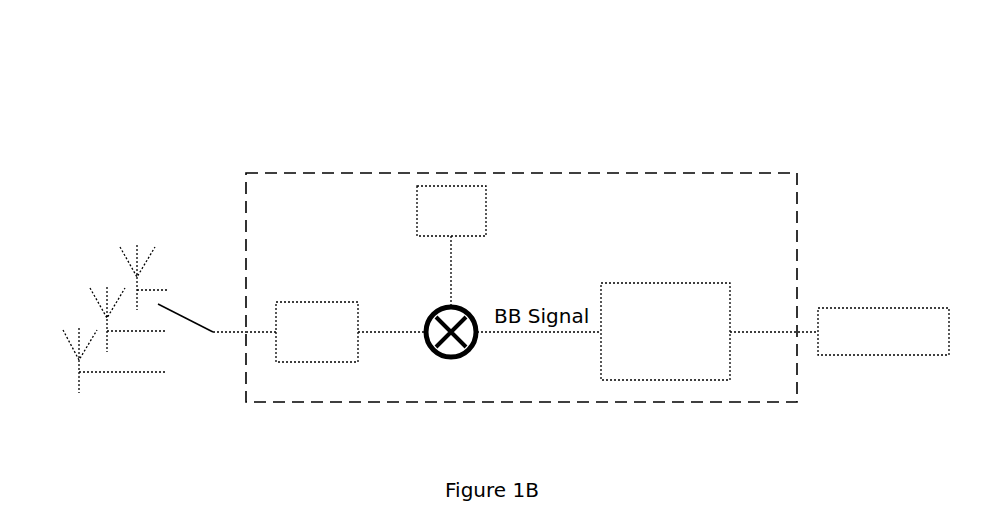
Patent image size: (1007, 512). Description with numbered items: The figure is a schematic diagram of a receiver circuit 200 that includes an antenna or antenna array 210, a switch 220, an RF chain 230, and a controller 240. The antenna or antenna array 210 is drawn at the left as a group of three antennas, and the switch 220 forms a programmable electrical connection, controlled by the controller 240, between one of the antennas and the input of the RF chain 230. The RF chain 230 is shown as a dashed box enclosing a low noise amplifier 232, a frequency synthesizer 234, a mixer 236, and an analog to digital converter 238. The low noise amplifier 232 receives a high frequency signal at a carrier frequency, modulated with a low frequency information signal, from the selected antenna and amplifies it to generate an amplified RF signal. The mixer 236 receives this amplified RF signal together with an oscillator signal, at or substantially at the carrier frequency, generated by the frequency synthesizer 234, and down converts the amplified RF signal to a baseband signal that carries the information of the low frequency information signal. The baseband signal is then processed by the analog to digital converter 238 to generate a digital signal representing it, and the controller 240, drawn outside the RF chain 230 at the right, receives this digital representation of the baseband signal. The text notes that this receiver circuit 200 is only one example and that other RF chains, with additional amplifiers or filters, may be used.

The receiver circuit 200 is at (680, 45).
The antenna or antenna array 210 is at (60, 262).
The switch 220 is at (185, 265).
The RF chain 230 is at (488, 173).
The low noise amplifier 232 is at (347, 301).
The frequency synthesizer 234 is at (487, 218).
The mixer 236 is at (468, 345).
The analog to digital converter 238 is at (730, 290).
The controller 240 is at (892, 308).